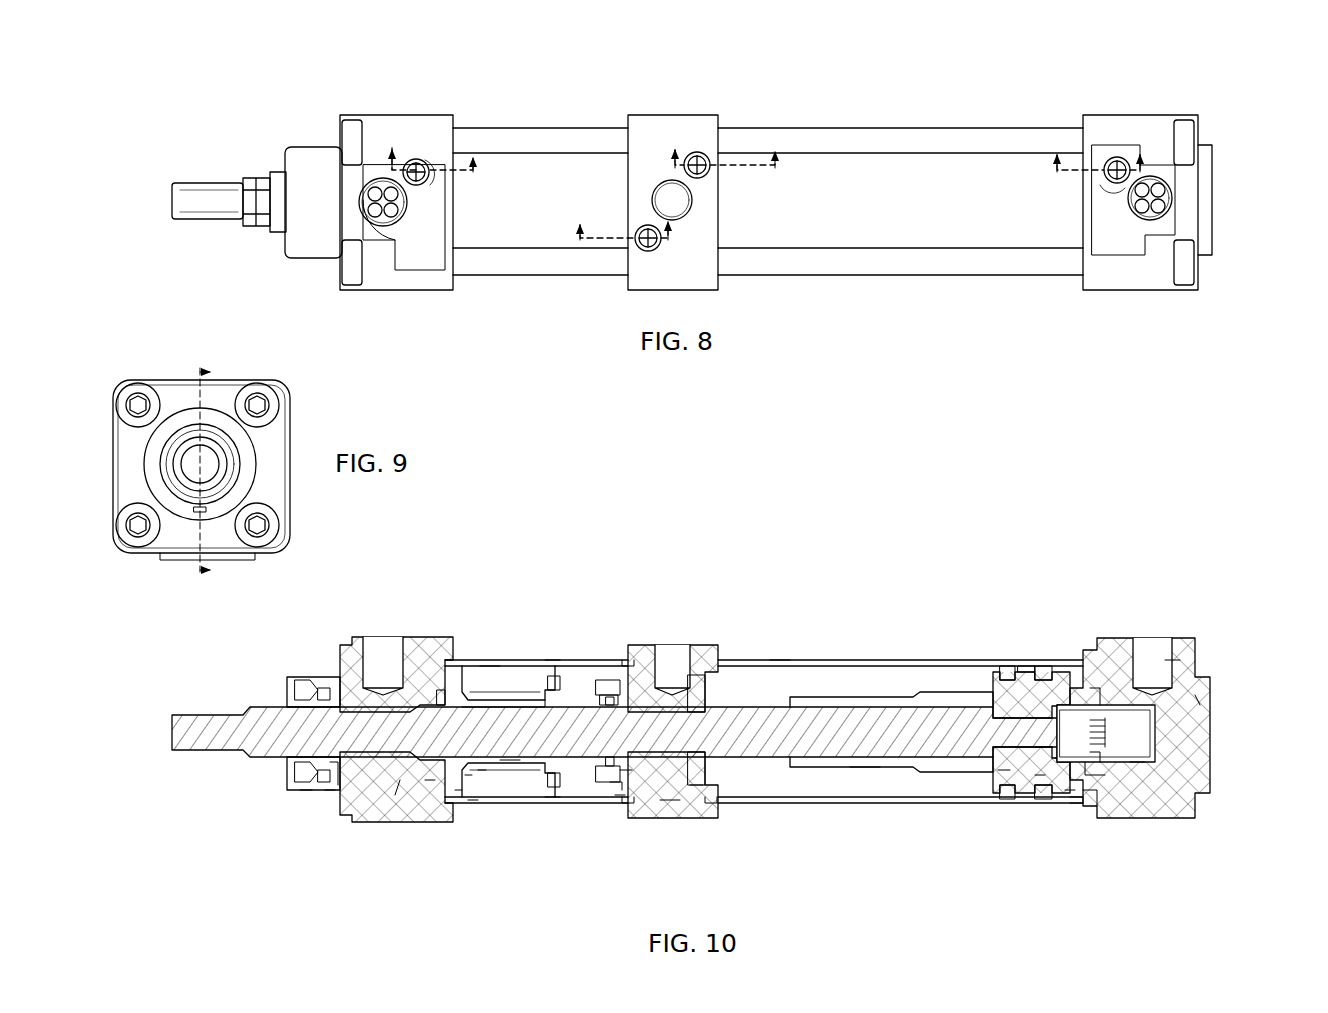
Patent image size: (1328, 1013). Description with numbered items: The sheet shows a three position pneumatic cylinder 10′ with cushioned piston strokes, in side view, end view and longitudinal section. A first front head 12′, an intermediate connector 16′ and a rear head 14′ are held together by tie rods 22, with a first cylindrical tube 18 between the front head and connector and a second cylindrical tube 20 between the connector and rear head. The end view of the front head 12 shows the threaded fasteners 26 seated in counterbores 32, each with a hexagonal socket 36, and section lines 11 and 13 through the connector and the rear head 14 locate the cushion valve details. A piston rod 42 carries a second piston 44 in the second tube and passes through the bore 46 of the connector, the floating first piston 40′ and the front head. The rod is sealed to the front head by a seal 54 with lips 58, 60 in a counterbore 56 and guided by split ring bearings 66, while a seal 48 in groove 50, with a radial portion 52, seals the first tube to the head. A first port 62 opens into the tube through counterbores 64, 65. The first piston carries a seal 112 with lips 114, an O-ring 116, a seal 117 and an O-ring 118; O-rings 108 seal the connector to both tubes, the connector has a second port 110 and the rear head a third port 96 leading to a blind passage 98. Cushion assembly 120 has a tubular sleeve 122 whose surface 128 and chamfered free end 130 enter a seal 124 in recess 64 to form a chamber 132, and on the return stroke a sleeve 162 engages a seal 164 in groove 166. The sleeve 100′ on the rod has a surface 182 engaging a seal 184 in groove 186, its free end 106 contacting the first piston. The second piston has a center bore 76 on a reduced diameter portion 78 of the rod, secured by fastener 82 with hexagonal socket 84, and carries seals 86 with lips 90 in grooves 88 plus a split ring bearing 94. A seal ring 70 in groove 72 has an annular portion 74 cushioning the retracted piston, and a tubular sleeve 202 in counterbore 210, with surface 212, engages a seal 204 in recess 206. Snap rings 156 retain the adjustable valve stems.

In FIG. 8, the three position pneumatic cylinder 10′ is at (233, 135).
In FIG. 8, the first front head 12′ is at (395, 116).
In FIG. 10, the first front head 12′ is at (362, 640).
In FIG. 8, the rear head 14′ is at (1143, 113).
In FIG. 10, the rear head 14′ is at (1125, 634).
In FIG. 8, the intermediate connector 16′ is at (680, 113).
In FIG. 10, the intermediate connector 16′ is at (643, 648).
In FIG. 8, the first cylindrical tube 18 is at (547, 185).
In FIG. 10, the first cylindrical tube 18 is at (470, 658).
In FIG. 8, the second cylindrical tube 20 is at (843, 172).
In FIG. 10, the second cylindrical tube 20 is at (800, 658).
In FIG. 8, the tie rods 22 is at (921, 128).
In FIG. 8, the first port 62 is at (375, 195).
In FIG. 10, the first port 62 is at (388, 660).
In FIG. 8, the snap ring 156 is at (420, 168).
In FIG. 8, the section line 11 is at (433, 148).
In FIG. 8, the first front head 12 is at (625, 221).
In FIG. 9, the first front head 12 is at (268, 376).
In FIG. 8, the section line 13 is at (726, 146).
In FIG. 8, the second rear head 14 is at (1105, 150).
In FIG. 8, the second port 110 is at (692, 205).
In FIG. 10, the second port 110 is at (672, 655).
In FIG. 8, the third port 96 is at (1140, 199).
In FIG. 10, the third port 96 is at (1152, 650).
In FIG. 8, the piston rod 42 is at (220, 208).
In FIG. 10, the piston rod 42 is at (220, 713).
In FIG. 9, the counterbore 32 is at (283, 523).
In FIG. 9, the threaded fasteners 26 is at (262, 538).
In FIG. 9, the hexagonal socket 36 is at (140, 537).
In FIG. 10, the circumferentially continuous seal 54 is at (305, 683).
In FIG. 10, the lip 58 is at (290, 698).
In FIG. 10, the counterbore 56 is at (305, 770).
In FIG. 10, the lip 60 is at (318, 773).
In FIG. 10, the counterbore 64 is at (438, 672).
In FIG. 10, the bearings 66 is at (326, 792).
In FIG. 10, the counterbore 65 is at (400, 782).
In FIG. 10, the seal 124 is at (430, 772).
In FIG. 10, the groove 50 is at (458, 795).
In FIG. 10, the annular seal 48 is at (470, 778).
In FIG. 10, the exterior cylindrical surface portion 128 is at (482, 775).
In FIG. 10, the annular radially extending portion 52 is at (472, 802).
In FIG. 10, the cushion assembly 120 is at (510, 690).
In FIG. 10, the free end 130 is at (455, 708).
In FIG. 10, the chamber 132 is at (490, 660).
In FIG. 10, the annular lips 114 is at (553, 660).
In FIG. 10, the circumferentially continuous seal 112 is at (562, 668).
In FIG. 10, the tubular sleeve 122 is at (552, 800).
In FIG. 10, the first floating piston 40′ is at (512, 765).
In FIG. 10, the seal 164 is at (606, 678).
In FIG. 10, the groove 166 is at (605, 690).
In FIG. 10, the circumferentially continuous seal 117 is at (612, 708).
In FIG. 10, the sleeve 162 is at (620, 792).
In FIG. 10, the O-ring 116 is at (616, 800).
In FIG. 10, the O-ring 118 is at (628, 773).
In FIG. 10, the O-rings 108 is at (624, 658).
In FIG. 10, the seal 184 is at (738, 660).
In FIG. 10, the groove 186 is at (760, 795).
In FIG. 10, the bore 46 is at (670, 802).
In FIG. 10, the free end 106 is at (785, 658).
In FIG. 10, the cylindrical surface portion 182 is at (833, 694).
In FIG. 10, the sleeve 100′ is at (862, 772).
In FIG. 10, the second piston 44 is at (982, 668).
In FIG. 10, the annular lips 90 is at (1005, 664).
In FIG. 10, the circumferentially continuous seals 86 is at (1036, 664).
In FIG. 10, the annular split ring bearing 94 is at (1040, 664).
In FIG. 10, the center bore 76 is at (1045, 748).
In FIG. 10, the reduced diameter portion 78 is at (1003, 772).
In FIG. 10, the groove 88 is at (1040, 777).
In FIG. 10, the counterbore 210 is at (1062, 762).
In FIG. 10, the annular portion 74 is at (1070, 793).
In FIG. 10, the annular seal ring 70 is at (1076, 805).
In FIG. 10, the recess 206 is at (1098, 662).
In FIG. 10, the exterior cylindrical surface portion 212 is at (1175, 662).
In FIG. 10, the blind passage 98 is at (1200, 700).
In FIG. 10, the hexagonal socket 84 is at (1100, 727).
In FIG. 10, the tubular sleeve 202 is at (1140, 766).
In FIG. 10, the fastener 82 is at (1096, 757).
In FIG. 10, the seal 204 is at (1100, 768).
In FIG. 10, the groove 72 is at (1086, 796).